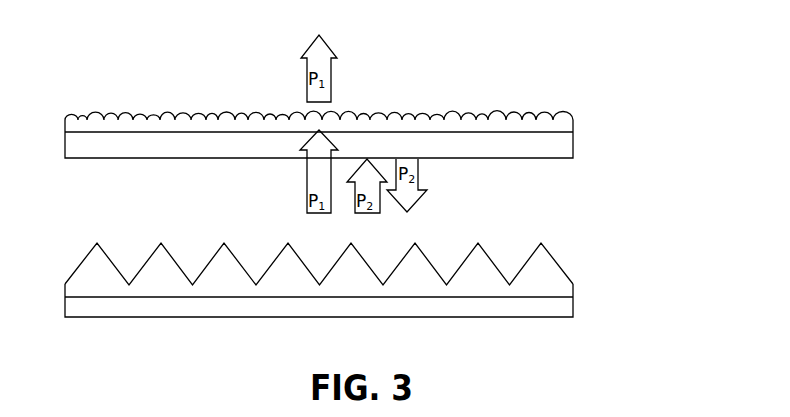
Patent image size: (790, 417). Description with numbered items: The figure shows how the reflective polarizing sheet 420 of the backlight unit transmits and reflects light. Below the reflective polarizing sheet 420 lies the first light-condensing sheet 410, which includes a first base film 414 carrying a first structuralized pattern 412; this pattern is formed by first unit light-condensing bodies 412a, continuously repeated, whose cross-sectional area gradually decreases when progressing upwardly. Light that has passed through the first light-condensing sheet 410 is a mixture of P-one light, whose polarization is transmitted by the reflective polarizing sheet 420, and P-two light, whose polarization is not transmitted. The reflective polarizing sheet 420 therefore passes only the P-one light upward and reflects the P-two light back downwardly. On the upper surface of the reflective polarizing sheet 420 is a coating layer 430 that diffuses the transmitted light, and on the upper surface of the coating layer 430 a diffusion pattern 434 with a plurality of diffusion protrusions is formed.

The first light-condensing sheet 410 is at (356, 259).
The first structuralized pattern 412 is at (547, 272).
The first unit light-condensing bodies 412a is at (115, 276).
The first base film 414 is at (560, 303).
The reflective polarizing sheet 420 is at (558, 157).
The coating layer 430 is at (557, 124).
The diffusion pattern 434 is at (165, 113).